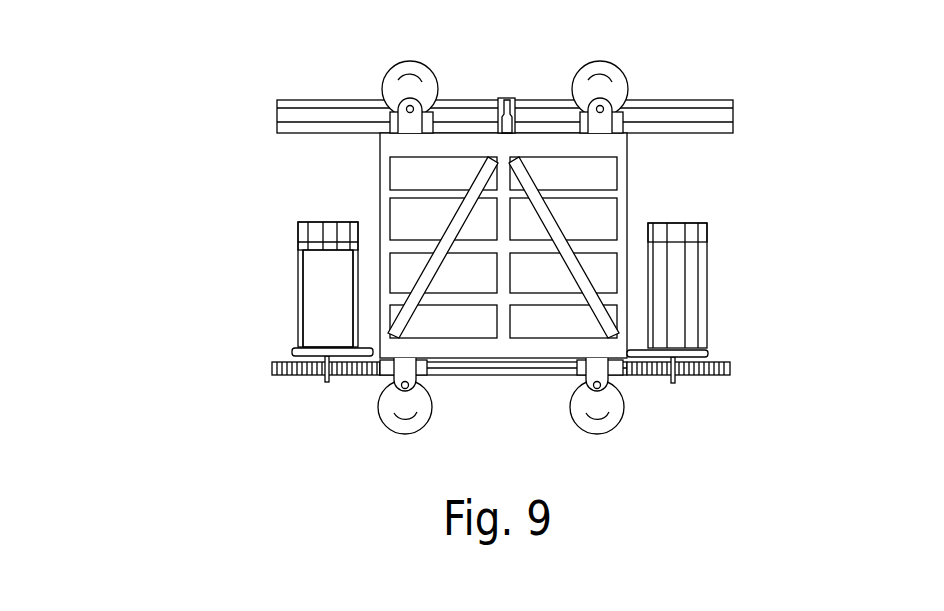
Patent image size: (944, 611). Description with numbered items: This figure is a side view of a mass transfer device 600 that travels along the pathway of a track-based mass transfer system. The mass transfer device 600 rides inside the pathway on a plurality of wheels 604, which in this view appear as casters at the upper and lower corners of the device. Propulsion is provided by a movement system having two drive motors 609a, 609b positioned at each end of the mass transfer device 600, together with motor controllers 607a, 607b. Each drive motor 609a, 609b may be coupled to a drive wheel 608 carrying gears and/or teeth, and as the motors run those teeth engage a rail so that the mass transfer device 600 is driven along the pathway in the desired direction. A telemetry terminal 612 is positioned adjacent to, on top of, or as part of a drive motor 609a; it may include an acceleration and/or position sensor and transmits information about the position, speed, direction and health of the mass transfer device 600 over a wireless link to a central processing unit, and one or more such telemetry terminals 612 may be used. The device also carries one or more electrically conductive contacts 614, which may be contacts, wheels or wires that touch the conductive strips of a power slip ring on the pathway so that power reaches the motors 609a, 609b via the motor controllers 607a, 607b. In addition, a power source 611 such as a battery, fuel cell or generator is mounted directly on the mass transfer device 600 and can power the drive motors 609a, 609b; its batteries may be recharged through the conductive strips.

The mass transfer device 600 is at (196, 151).
The wheels 604 is at (597, 433).
The motor controller 607a is at (330, 230).
The motor controller 607b is at (690, 230).
The drive wheel 608 is at (292, 376).
The drive motor 609a is at (300, 262).
The drive motor 609b is at (690, 275).
The power source 611 is at (603, 173).
The telemetry terminal 612 is at (313, 290).
The electrically conductive contacts 614 is at (508, 98).